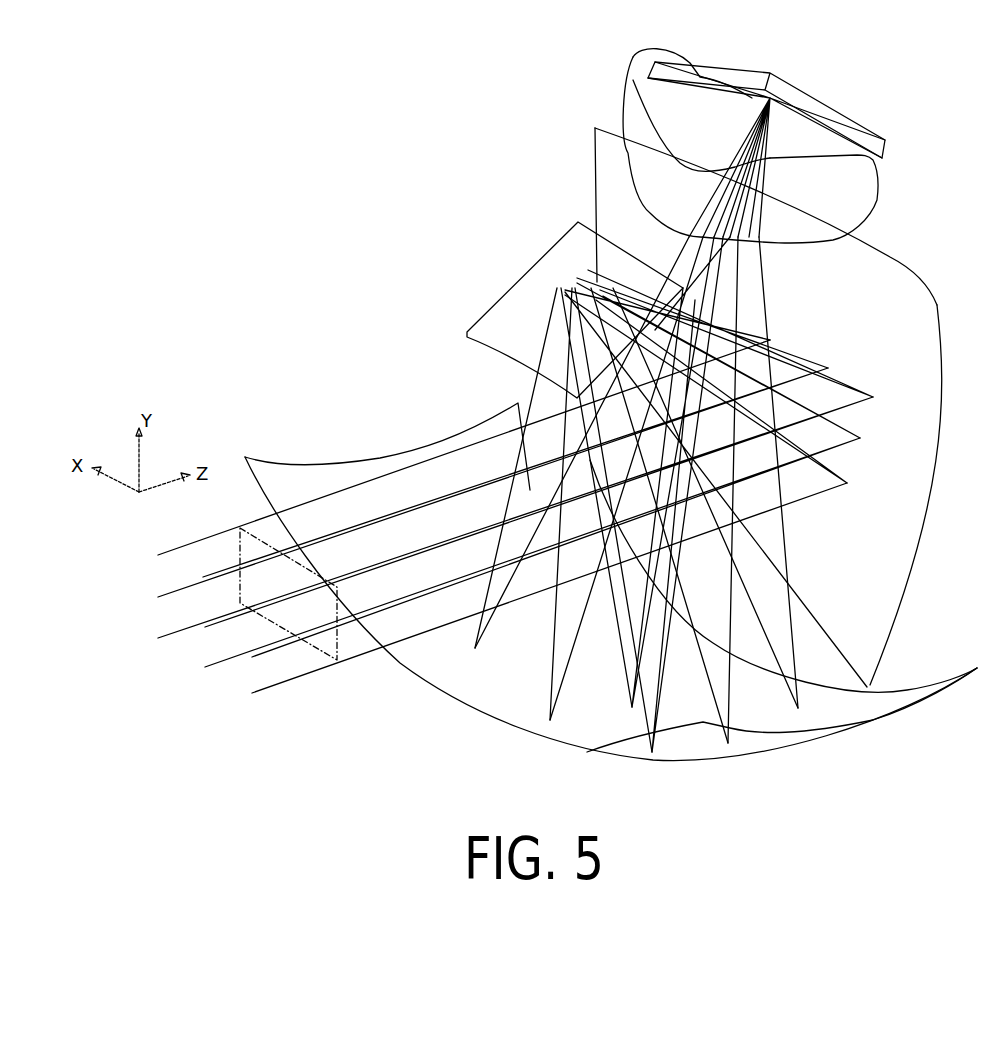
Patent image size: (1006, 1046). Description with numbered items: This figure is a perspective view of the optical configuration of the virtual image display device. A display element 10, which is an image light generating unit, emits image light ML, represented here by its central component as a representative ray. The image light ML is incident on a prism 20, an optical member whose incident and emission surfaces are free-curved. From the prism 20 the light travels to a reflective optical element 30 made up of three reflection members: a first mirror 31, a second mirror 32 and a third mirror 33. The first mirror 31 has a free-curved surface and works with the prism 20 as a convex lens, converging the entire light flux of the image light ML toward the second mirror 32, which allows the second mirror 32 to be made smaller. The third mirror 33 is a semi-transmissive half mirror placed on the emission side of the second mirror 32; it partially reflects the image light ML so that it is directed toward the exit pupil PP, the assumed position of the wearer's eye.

The display element 10 is at (818, 113).
The prism 20 is at (850, 197).
The reflective optical element 30 is at (400, 203).
The first mirror 31 is at (338, 478).
The second mirror 32 is at (520, 330).
The third mirror 33 is at (902, 488).
The image light ML is at (738, 300).
The exit pupil PP is at (349, 678).